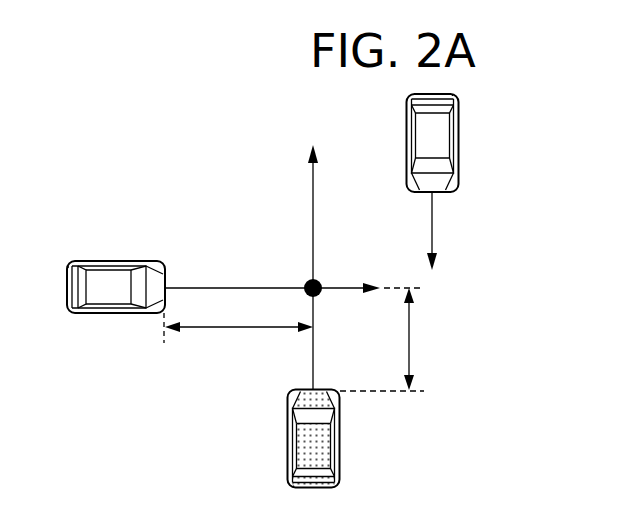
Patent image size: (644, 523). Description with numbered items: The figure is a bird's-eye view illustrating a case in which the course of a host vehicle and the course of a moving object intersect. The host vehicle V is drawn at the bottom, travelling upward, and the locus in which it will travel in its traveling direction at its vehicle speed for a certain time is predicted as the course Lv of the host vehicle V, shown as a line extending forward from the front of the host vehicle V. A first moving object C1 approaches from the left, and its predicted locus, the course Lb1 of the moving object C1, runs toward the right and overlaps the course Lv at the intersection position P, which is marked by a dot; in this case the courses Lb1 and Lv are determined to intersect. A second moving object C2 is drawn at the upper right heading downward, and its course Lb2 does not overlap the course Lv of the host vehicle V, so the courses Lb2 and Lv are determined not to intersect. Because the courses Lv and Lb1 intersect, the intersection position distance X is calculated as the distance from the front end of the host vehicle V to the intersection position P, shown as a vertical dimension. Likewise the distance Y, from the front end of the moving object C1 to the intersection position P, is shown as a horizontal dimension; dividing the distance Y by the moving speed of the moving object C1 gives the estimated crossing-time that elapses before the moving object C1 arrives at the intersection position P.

The moving object C1 is at (80, 262).
The moving object C2 is at (459, 145).
The course of moving object C1 Lb1 is at (228, 287).
The course of moving object C2 Lb2 is at (433, 224).
The course of host vehicle Lv is at (311, 362).
The intersection position P is at (319, 282).
The host vehicle V is at (341, 460).
The intersection position distance X is at (385, 339).
The distance from moving object to intersection position Y is at (238, 321).